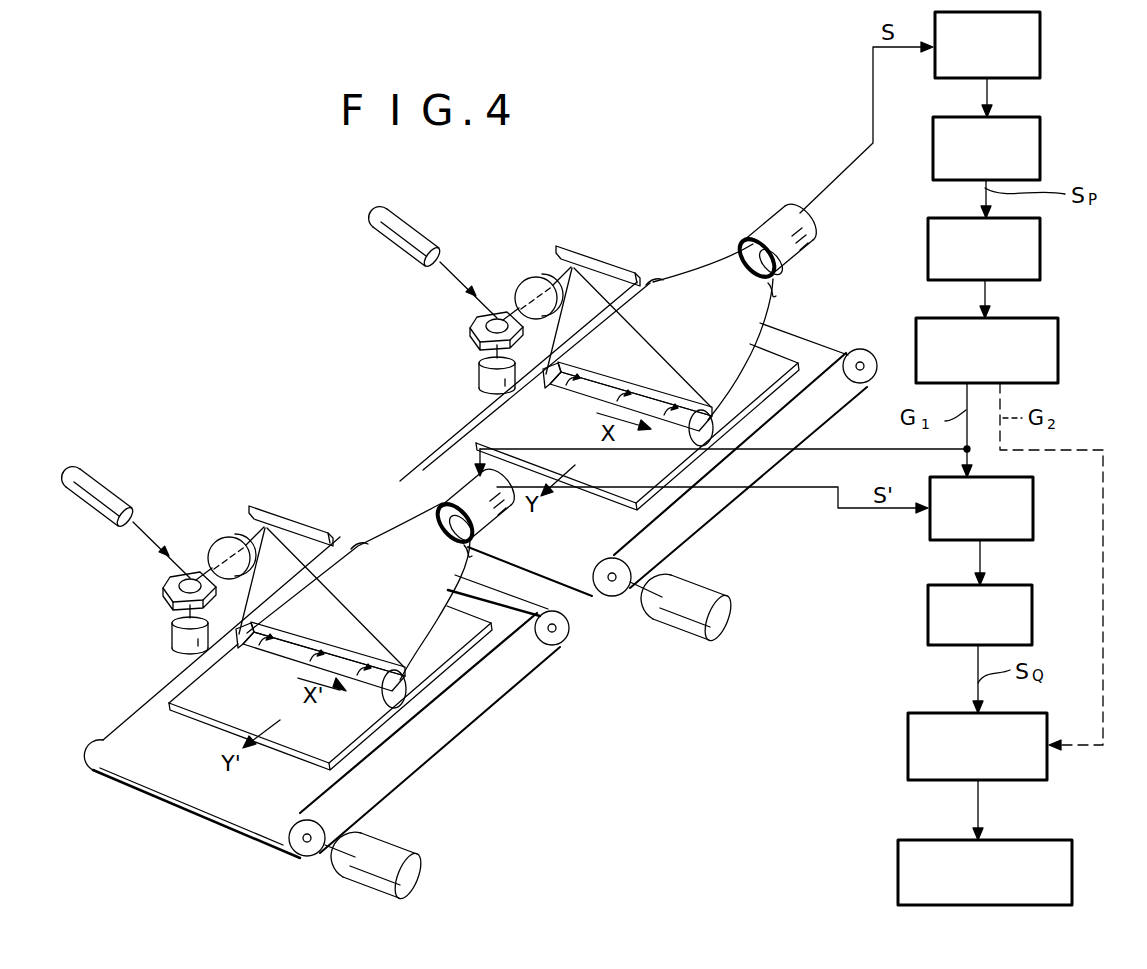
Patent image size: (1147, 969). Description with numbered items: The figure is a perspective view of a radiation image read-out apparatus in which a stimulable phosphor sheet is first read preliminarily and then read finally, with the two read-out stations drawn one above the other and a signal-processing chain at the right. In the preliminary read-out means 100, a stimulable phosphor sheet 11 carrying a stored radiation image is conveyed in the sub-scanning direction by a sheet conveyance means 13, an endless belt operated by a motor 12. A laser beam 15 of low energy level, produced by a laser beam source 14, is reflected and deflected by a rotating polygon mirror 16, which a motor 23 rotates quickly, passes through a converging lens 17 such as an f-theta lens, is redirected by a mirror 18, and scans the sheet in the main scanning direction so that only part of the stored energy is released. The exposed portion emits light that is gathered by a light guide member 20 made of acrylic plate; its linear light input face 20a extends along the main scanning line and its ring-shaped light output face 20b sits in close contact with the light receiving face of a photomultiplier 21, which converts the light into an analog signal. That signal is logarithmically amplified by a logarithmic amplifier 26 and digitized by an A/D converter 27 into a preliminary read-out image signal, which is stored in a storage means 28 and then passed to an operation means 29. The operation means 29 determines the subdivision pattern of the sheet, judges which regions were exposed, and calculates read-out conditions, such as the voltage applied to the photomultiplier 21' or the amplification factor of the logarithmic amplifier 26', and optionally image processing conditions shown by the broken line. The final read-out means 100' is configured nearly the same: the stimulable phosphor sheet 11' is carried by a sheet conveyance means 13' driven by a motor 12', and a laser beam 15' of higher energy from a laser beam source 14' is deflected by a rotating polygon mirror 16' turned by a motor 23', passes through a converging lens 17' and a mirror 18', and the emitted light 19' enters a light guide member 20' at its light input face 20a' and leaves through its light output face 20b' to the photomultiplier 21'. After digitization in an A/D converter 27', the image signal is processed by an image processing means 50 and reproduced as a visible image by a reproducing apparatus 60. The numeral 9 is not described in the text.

The original document / scan line 9 is at (580, 378).
The stimulable phosphor sheet 11 is at (637, 437).
The stimulable phosphor sheet 11' is at (330, 695).
The motor 12 is at (699, 598).
The motor 12' is at (396, 859).
The sheet conveyance means 13 is at (638, 439).
The sheet conveyance means 13' is at (326, 697).
The laser beam source 14 is at (410, 231).
The laser beam source 14' is at (115, 490).
The laser beam 15 is at (505, 275).
The laser beam 15' is at (198, 535).
The rotating polygon mirror 16 is at (464, 325).
The rotating polygon mirror 16' is at (159, 578).
The converging lens 17 is at (531, 271).
The converging lens 17' is at (232, 522).
The mirror 18 is at (628, 312).
The mirror 18' is at (321, 572).
The emitted light 19' is at (312, 662).
The light guide member 20 is at (716, 322).
The light guide member 20' is at (362, 571).
The light input face 20a is at (763, 445).
The light input face 20a' is at (462, 710).
The light output face 20b is at (809, 298).
The light output face 20b' is at (523, 536).
The photomultiplier 21 is at (774, 226).
The photomultiplier 21' is at (457, 483).
The motor 23 is at (466, 369).
The motor 23' is at (155, 629).
The logarithmic amplifier 26 is at (1021, 45).
The logarithmic amplifier 26' is at (1010, 508).
The A/D converter 27 is at (1019, 148).
The A/D converter 27' is at (1009, 613).
The storage means 28 is at (1043, 258).
The operation means 29 is at (1061, 352).
The image processing means 50 is at (1050, 725).
The reproducing apparatus 60 is at (1075, 858).
The preliminary read-out means 100 is at (550, 188).
The final read-out means 100' is at (230, 435).